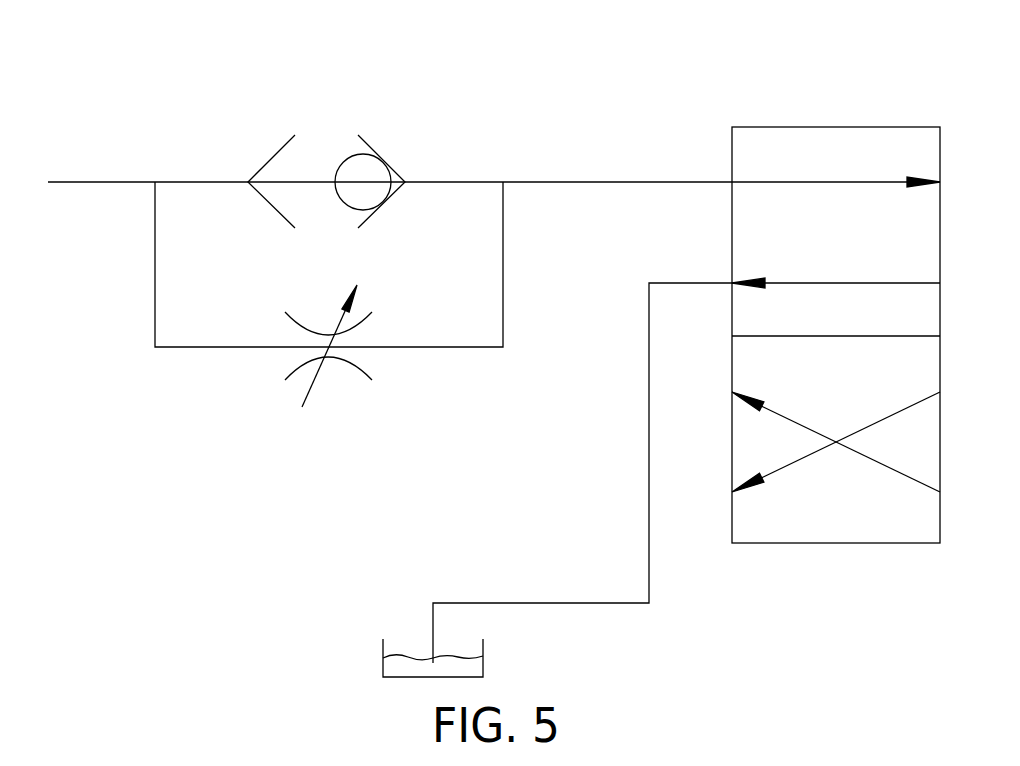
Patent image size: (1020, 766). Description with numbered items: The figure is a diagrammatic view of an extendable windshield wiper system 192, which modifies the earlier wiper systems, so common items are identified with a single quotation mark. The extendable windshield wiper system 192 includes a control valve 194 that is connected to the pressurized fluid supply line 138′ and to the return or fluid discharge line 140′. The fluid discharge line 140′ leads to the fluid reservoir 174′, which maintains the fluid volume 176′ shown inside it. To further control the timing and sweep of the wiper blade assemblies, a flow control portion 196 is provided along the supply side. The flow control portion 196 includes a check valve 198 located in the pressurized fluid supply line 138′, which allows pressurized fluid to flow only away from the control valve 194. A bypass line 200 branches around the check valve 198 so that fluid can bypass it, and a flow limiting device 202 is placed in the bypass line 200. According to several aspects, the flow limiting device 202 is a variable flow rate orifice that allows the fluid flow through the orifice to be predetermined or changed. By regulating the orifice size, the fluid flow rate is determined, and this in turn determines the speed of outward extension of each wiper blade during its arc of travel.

The extendable windshield wiper system 192 is at (842, 272).
The control valve 194 is at (890, 127).
The flow control portion 196 is at (381, 138).
The check valve 198 is at (345, 160).
The bypass line 200 is at (470, 347).
The flow limiting device 202 is at (367, 370).
The pressurized fluid supply line 138′ is at (640, 182).
The fluid discharge line 140′ is at (649, 463).
The fluid reservoir 174′ is at (485, 648).
The fluid volume 176′ is at (410, 667).